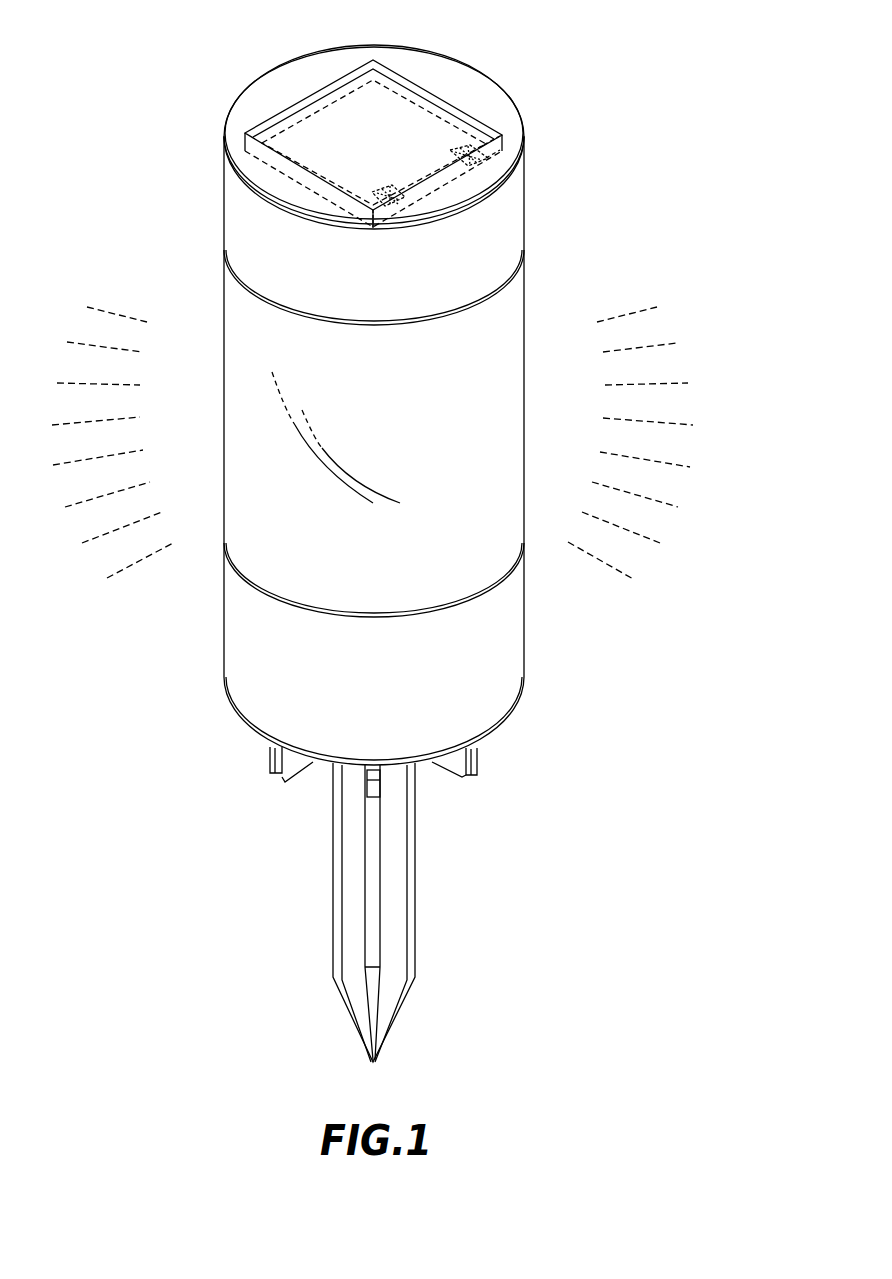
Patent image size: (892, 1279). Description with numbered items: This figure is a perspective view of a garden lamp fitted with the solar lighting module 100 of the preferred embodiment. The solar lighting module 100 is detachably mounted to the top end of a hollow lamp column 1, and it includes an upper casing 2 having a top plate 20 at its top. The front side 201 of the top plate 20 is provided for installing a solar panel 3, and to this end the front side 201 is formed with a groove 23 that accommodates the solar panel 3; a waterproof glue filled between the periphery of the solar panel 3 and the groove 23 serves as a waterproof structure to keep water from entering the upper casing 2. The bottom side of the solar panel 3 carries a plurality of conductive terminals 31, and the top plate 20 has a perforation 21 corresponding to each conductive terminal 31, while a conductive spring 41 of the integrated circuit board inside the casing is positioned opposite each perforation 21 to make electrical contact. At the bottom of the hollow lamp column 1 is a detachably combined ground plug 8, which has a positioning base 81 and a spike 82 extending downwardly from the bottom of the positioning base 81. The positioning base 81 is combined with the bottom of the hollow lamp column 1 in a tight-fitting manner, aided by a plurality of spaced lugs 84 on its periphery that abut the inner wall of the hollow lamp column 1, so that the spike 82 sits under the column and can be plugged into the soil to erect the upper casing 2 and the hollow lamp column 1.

The solar lighting module 100 is at (198, 185).
The hollow lamp column 1 is at (500, 440).
The upper casing 2 is at (502, 223).
The top plate 20 is at (502, 115).
The front side 201 is at (374, 133).
The groove 23 is at (345, 75).
The solar panel 3 is at (403, 78).
The perforation 21 is at (445, 147).
The conductive spring 41 is at (457, 147).
The conductive terminal 31 is at (460, 140).
The ground plug 8 is at (298, 839).
The positioning base 81 is at (488, 740).
The spike 82 is at (400, 877).
The lug 84 is at (453, 763).